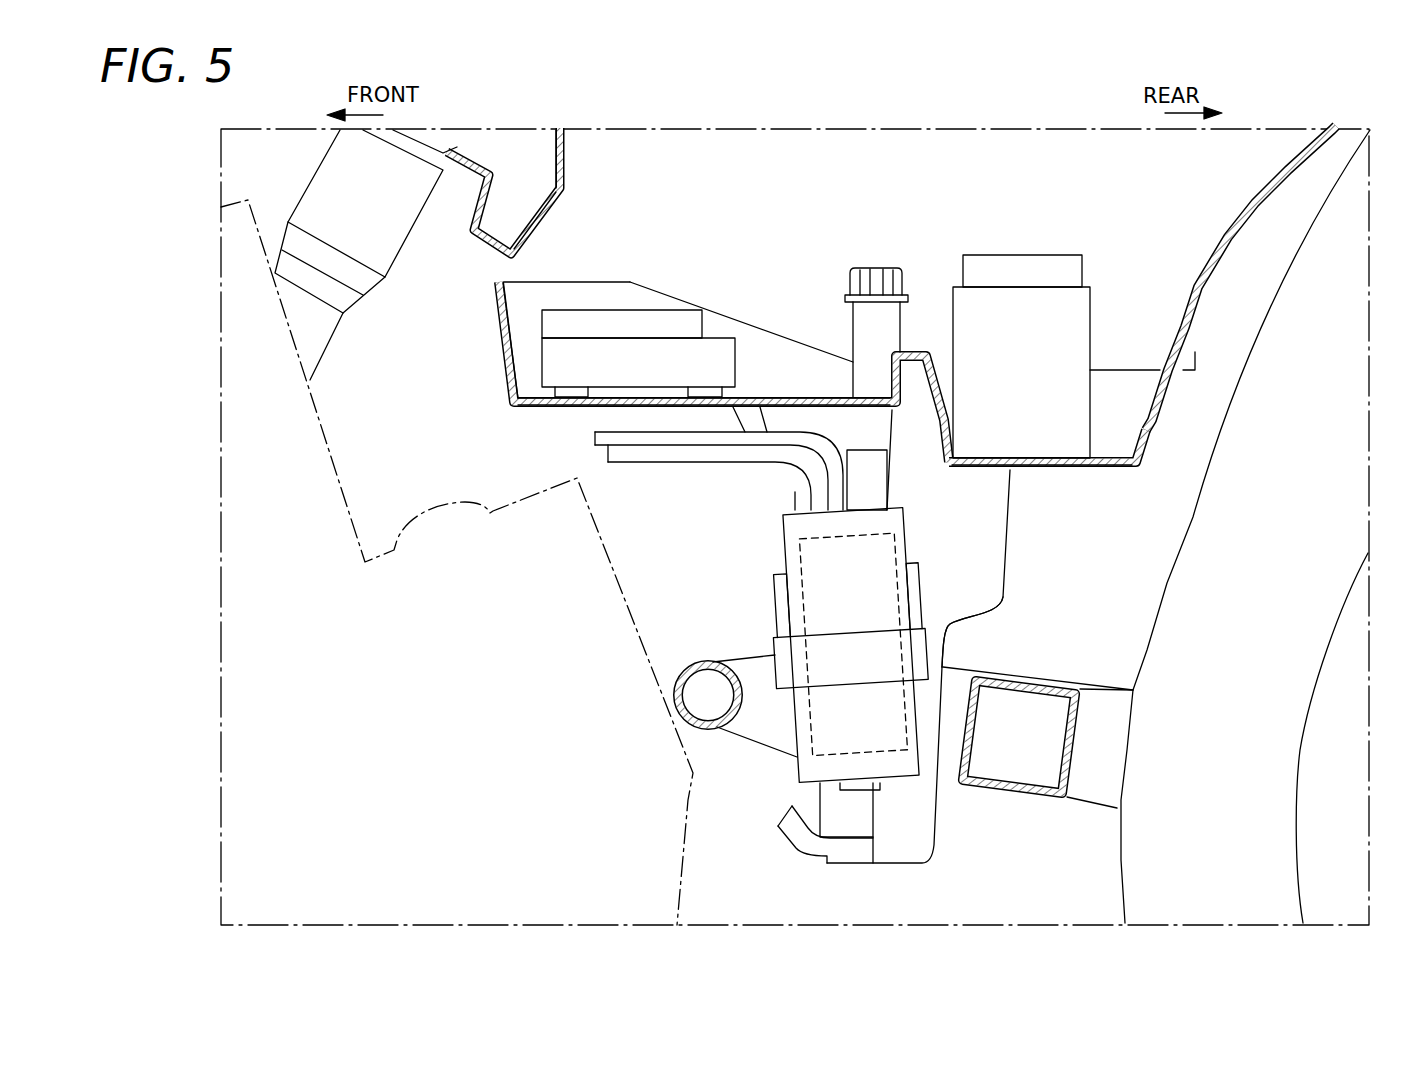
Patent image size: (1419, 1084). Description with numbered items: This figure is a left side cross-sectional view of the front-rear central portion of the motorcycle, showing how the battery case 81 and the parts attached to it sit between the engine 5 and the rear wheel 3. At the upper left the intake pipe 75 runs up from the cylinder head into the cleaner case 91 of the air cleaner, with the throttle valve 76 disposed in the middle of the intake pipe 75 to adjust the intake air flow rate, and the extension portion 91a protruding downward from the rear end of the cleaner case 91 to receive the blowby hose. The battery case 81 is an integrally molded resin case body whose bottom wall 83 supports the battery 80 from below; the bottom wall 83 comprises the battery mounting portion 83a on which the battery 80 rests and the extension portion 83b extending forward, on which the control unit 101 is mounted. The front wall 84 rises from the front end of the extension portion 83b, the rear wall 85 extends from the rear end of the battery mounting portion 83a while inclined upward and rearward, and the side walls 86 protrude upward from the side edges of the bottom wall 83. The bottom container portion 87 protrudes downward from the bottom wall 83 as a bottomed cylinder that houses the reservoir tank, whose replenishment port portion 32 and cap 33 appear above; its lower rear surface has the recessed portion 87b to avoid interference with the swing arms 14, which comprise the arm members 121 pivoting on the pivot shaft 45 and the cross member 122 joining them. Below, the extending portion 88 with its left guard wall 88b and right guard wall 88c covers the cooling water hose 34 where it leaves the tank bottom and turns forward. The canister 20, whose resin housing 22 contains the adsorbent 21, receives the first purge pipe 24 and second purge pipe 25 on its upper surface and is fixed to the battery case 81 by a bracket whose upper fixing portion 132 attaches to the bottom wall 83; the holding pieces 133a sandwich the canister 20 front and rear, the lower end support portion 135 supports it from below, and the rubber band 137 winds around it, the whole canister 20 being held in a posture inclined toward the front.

The rear wheel 3 is at (1300, 650).
The engine 5 is at (246, 502).
The swing arms 14 is at (1028, 800).
The canister 20 is at (777, 529).
The adsorbent 21 is at (793, 550).
The housing 22 is at (797, 731).
The first purge pipe 24 is at (737, 432).
The second purge pipe 25 is at (634, 452).
The replenishment port portion 32 is at (888, 322).
The cap 33 is at (873, 270).
The cooling water hose 34 is at (790, 808).
The pivot shaft 45 is at (688, 664).
The intake pipe 75 is at (318, 340).
The throttle valve 76 is at (337, 170).
The battery 80 is at (1070, 312).
The battery case 81 is at (505, 405).
The bottom wall 83 is at (825, 435).
The battery mounting portion 83a is at (1062, 470).
The extension portion 83b is at (813, 398).
The front wall 84 is at (503, 332).
The rear wall 85 is at (1195, 310).
The side walls 86 is at (642, 300).
The bottom container portion 87 is at (983, 522).
The recessed portion 87b is at (948, 642).
The extending portion 88 is at (932, 838).
The left guard wall 88b is at (897, 848).
The right guard wall 88c is at (833, 797).
The cleaner case 91 is at (567, 148).
The extension portion 91a is at (548, 226).
The control unit 101 is at (600, 326).
The arm members 121 is at (1093, 788).
The cross member 122 is at (1060, 681).
The upper fixing portion 132 is at (867, 463).
The holding pieces 133a is at (917, 590).
The lower end support portion 135 is at (873, 787).
The rubber band 137 is at (870, 668).